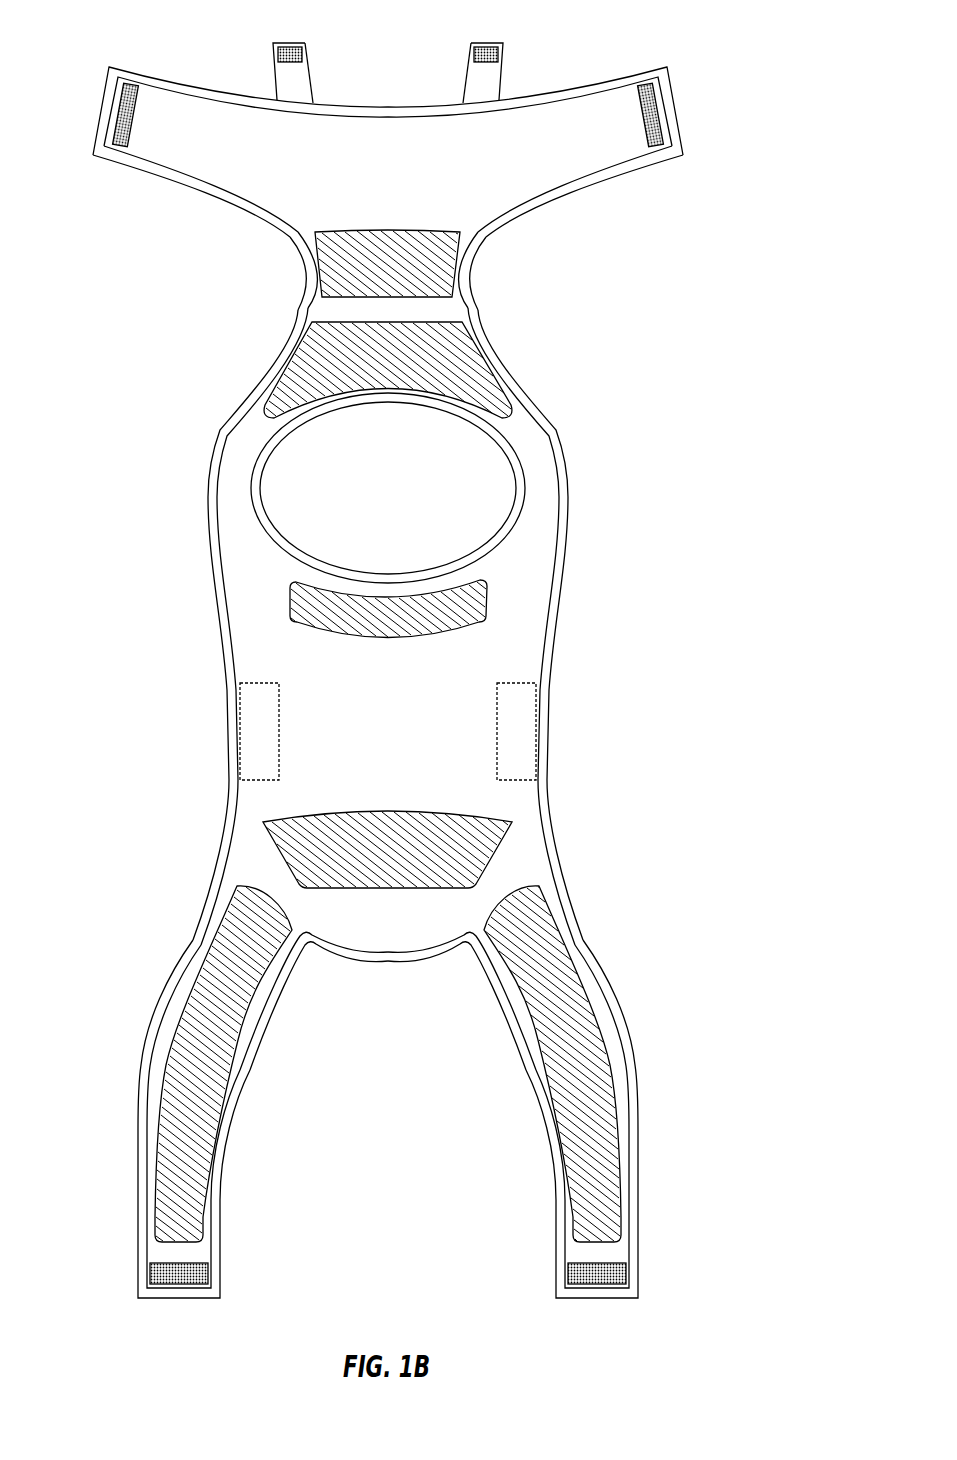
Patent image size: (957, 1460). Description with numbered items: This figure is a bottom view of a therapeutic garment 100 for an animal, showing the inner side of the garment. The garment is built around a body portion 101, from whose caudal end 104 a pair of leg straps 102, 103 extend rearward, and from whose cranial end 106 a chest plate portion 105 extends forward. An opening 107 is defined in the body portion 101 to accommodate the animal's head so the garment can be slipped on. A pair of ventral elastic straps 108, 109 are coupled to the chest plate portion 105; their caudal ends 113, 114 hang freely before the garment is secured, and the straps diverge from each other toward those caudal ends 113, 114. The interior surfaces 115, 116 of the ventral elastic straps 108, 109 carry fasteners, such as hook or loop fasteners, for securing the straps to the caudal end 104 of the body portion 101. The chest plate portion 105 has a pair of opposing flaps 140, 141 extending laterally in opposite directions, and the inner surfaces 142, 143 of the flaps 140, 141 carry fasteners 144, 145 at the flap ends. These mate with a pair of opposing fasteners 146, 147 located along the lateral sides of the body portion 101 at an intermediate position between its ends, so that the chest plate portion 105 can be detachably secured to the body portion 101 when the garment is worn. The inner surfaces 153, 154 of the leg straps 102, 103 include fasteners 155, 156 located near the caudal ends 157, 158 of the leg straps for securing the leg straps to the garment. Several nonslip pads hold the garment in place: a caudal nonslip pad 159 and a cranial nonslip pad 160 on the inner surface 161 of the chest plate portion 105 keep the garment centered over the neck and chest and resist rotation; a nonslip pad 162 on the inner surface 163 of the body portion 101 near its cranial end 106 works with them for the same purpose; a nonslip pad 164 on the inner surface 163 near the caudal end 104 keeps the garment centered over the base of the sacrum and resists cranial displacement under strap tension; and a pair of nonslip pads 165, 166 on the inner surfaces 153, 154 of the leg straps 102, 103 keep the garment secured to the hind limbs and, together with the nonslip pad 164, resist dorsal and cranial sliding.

The therapeutic garment 100 is at (803, 156).
The body portion 101 is at (382, 787).
The leg strap 102 is at (618, 1118).
The leg strap 103 is at (157, 1118).
The caudal end 104 is at (387, 957).
The chest plate portion 105 is at (380, 313).
The cranial end 106 is at (385, 583).
The opening 107 is at (388, 497).
The ventral elastic strap 108 is at (490, 80).
The ventral elastic strap 109 is at (280, 80).
The caudal end 113 is at (484, 45).
The caudal end 114 is at (291, 45).
The interior surface 115 is at (472, 88).
The interior surface 116 is at (303, 88).
The first flap 140 is at (600, 131).
The second flap 141 is at (175, 131).
The inner surface 142 is at (566, 151).
The inner surface 143 is at (240, 151).
The fastener 144 is at (658, 110).
The fastener 145 is at (113, 110).
The fastener 146 is at (517, 733).
The fastener 147 is at (257, 733).
The inner surface 153 is at (592, 1253).
The inner surface 154 is at (180, 1253).
The fastener 155 is at (627, 1283).
The fastener 156 is at (165, 1273).
The caudal end 157 is at (592, 1292).
The caudal end 158 is at (178, 1292).
The caudal nonslip pad 159 is at (385, 267).
The cranial nonslip pad 160 is at (393, 355).
The inner surface 161 is at (403, 202).
The nonslip pad 162 is at (415, 620).
The inner surface 163 is at (401, 735).
The nonslip pad 164 is at (387, 848).
The nonslip pad 165 is at (584, 1047).
The nonslip pad 166 is at (192, 1047).